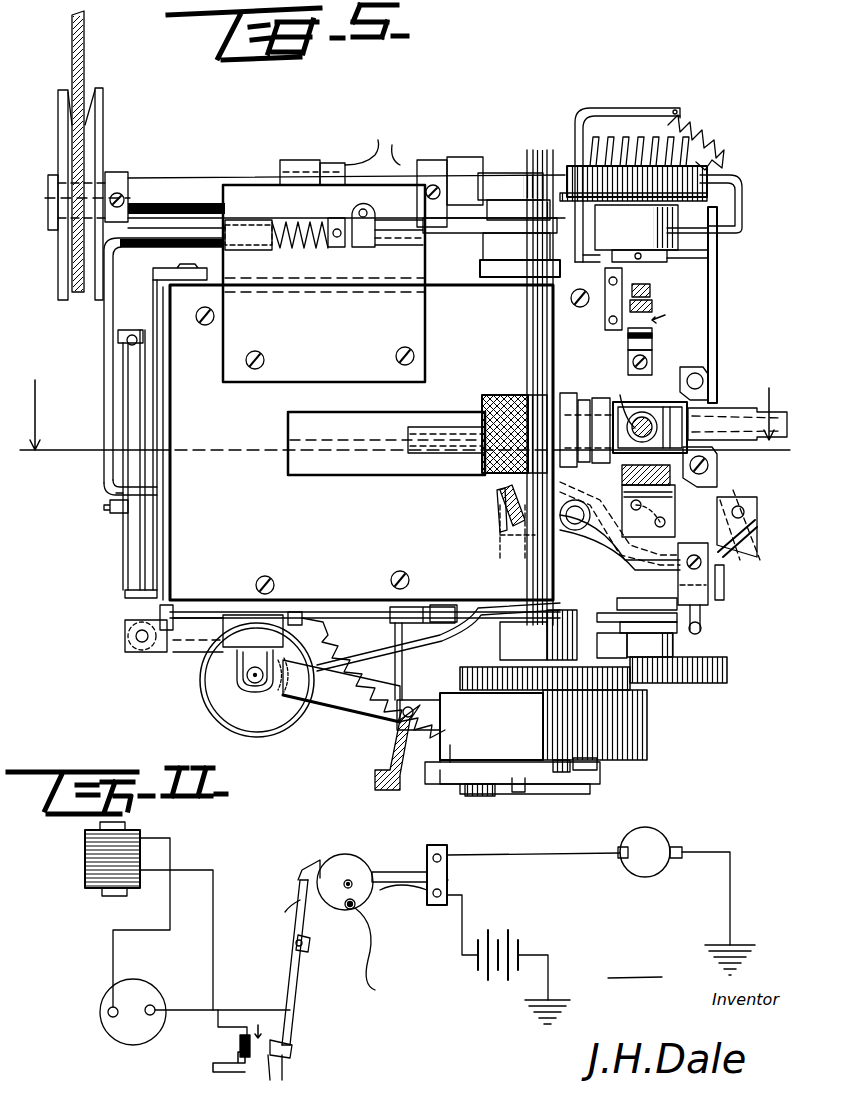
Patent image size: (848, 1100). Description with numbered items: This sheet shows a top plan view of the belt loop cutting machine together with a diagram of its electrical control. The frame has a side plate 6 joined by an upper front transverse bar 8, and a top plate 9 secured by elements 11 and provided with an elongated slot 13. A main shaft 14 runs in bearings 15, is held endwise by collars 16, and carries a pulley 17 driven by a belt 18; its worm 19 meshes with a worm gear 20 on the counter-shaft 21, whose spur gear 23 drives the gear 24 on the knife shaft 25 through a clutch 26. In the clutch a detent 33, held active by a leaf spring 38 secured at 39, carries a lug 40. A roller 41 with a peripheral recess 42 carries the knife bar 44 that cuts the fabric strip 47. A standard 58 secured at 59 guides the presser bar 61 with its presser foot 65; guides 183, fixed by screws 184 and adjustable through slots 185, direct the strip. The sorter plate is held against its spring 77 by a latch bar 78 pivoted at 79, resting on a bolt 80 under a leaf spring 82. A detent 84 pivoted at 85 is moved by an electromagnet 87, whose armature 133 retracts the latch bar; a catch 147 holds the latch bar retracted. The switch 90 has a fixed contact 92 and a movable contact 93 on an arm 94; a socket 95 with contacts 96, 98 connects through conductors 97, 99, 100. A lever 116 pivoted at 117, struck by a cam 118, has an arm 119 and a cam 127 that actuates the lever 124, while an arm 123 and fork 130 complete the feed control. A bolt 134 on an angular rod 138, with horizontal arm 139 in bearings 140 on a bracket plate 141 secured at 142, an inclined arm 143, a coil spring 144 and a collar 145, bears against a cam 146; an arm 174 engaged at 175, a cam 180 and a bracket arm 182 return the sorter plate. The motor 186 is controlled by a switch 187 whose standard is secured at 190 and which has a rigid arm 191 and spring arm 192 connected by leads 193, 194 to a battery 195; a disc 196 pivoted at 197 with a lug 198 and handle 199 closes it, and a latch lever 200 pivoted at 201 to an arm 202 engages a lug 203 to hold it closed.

In FIG. 5, the side plate 6 is at (396, 414).
In FIG. 5, the upper front transverse bar 8 is at (158, 470).
In FIG. 5, the top plate 9 is at (720, 298).
In FIG. 5, the securing elements 11 is at (208, 330).
In FIG. 5, the elongated slot 13 is at (330, 465).
In FIG. 5, the main shaft 14 is at (196, 188).
In FIG. 5, the bearings 15 is at (298, 165).
In FIG. 5, the collars 16 is at (372, 138).
In FIG. 5, the pulley 17 is at (103, 122).
In FIG. 5, the belt 18 is at (86, 51).
In FIG. 5, the worm 19 is at (608, 140).
In FIG. 5, the worm gear 20 is at (700, 140).
In FIG. 5, the counter-shaft 21 is at (680, 650).
In FIG. 5, the spur gear 23 is at (708, 690).
In FIG. 5, the gear 24 is at (520, 680).
In FIG. 5, the knife shaft 25 is at (527, 322).
In FIG. 5, the clutch 26 is at (640, 764).
In FIG. 5, the detent 33 is at (453, 780).
In FIG. 5, the leaf spring 38 is at (520, 793).
In FIG. 5, the spring securing point 39 is at (352, 700).
In FIG. 5, the lug 40 is at (432, 772).
In FIG. 5, the roller 41 is at (490, 392).
In FIG. 5, the peripheral recess 42 is at (565, 392).
In FIG. 5, the knife bar 44 is at (520, 380).
In FIG. 5, the fabric strip 47 is at (408, 455).
In FIG. 5, the standard 58 is at (620, 475).
In FIG. 5, the standard securing point 59 is at (648, 511).
In FIG. 5, the presser bar 61 is at (619, 399).
In FIG. 5, the presser foot 65 is at (640, 412).
In FIG. 5, the spring 77 is at (360, 625).
In FIG. 5, the latch bar 78 is at (132, 565).
In FIG. 5, the latch bar pivot 79 is at (156, 650).
In FIG. 5, the bolt 80 is at (112, 513).
In FIG. 5, the leaf spring 82 is at (150, 528).
In FIG. 5, the detent 84 is at (388, 780).
In FIG. 5, the detent pivot 85 is at (465, 650).
In FIG. 5, the electromagnet 87 is at (272, 704).
In FIG. 11, the electromagnet 87 is at (85, 874).
In FIG. 5, the switch 90 is at (673, 324).
In FIG. 11, the switch 90 is at (241, 1021).
In FIG. 5, the fixed contact 92 is at (655, 335).
In FIG. 11, the fixed contact 92 is at (252, 1050).
In FIG. 5, the movable contact 93 is at (655, 305).
In FIG. 11, the movable contact 93 is at (292, 1060).
In FIG. 5, the arm 94 is at (610, 310).
In FIG. 11, the arm 94 is at (283, 990).
In FIG. 11, the socket 95 is at (115, 1040).
In FIG. 11, the socket contact 96 is at (108, 1010).
In FIG. 11, the conductor 97 is at (175, 928).
In FIG. 11, the socket contact 98 is at (155, 1005).
In FIG. 11, the conductor 99 is at (190, 1012).
In FIG. 11, the conductor 100 is at (215, 938).
In FIG. 5, the lever 116 is at (610, 565).
In FIG. 5, the lever pivot 117 is at (530, 520).
In FIG. 5, the cam 118 is at (500, 555).
In FIG. 5, the downwardly extending arm 119 is at (757, 515).
In FIG. 5, the arm 123 is at (760, 540).
In FIG. 5, the lever 124 is at (705, 625).
In FIG. 5, the cam 127 is at (710, 600).
In FIG. 5, the fork 130 is at (622, 630).
In FIG. 5, the armature 133 is at (240, 688).
In FIG. 5, the bolt 134 is at (117, 493).
In FIG. 5, the angular rod 138 is at (132, 256).
In FIG. 5, the horizontal arm 139 is at (150, 235).
In FIG. 5, the bearings 140 is at (262, 222).
In FIG. 5, the bracket plate 141 is at (300, 385).
In FIG. 5, the bracket securing point 142 is at (250, 370).
In FIG. 5, the inclined arm 143 is at (106, 390).
In FIG. 5, the coil spring 144 is at (315, 260).
In FIG. 5, the collar 145 is at (348, 250).
In FIG. 5, the cam 146 is at (505, 230).
In FIG. 5, the catch 147 is at (118, 332).
In FIG. 5, the arm 174 is at (755, 198).
In FIG. 5, the engagement point 175 is at (560, 175).
In FIG. 5, the cam 180 is at (512, 175).
In FIG. 5, the bracket arm 182 is at (655, 112).
In FIG. 5, the guides 183 is at (712, 385).
In FIG. 5, the screws 184 is at (715, 360).
In FIG. 5, the elongated slots 185 is at (768, 500).
In FIG. 11, the electric motor 186 is at (650, 880).
In FIG. 11, the switch 187 is at (455, 880).
In FIG. 5, the standard securing point 190 is at (603, 277).
In FIG. 11, the rigid arm 191 is at (385, 870).
In FIG. 11, the spring arm 192 is at (418, 905).
In FIG. 11, the lead 193 is at (552, 850).
In FIG. 11, the lead 194 is at (465, 918).
In FIG. 11, the battery 195 is at (494, 970).
In FIG. 11, the disc 196 is at (342, 867).
In FIG. 11, the disc pivot 197 is at (347, 895).
In FIG. 11, the lug 198 is at (380, 920).
In FIG. 11, the operating handle 199 is at (388, 986).
In FIG. 11, the latch lever 200 is at (270, 906).
In FIG. 11, the latch lever pivot 201 is at (295, 948).
In FIG. 11, the arm 202 is at (312, 950).
In FIG. 11, the lug 203 is at (290, 876).